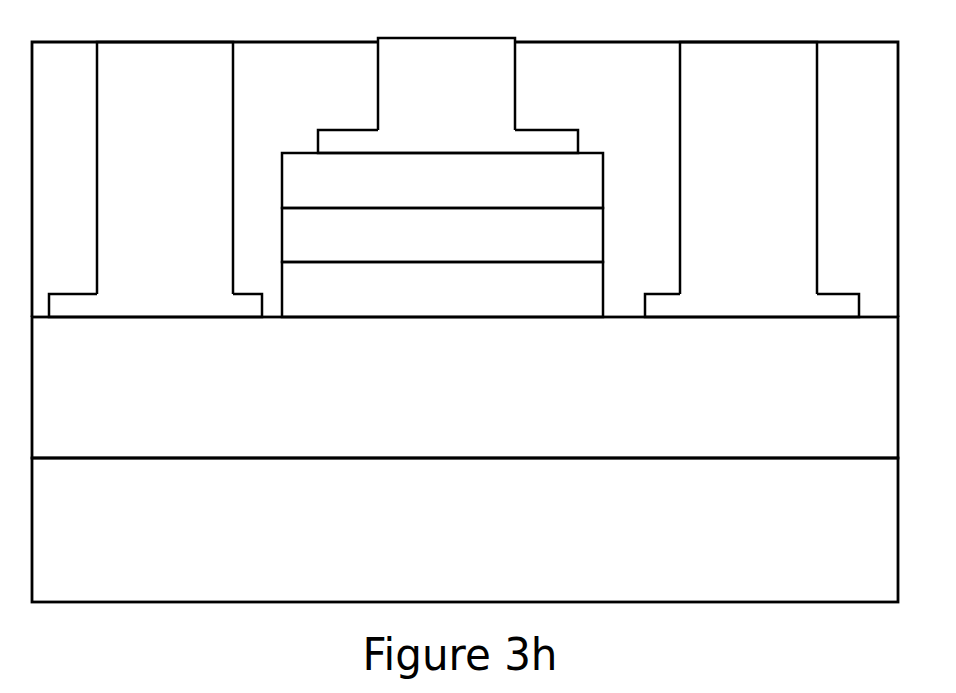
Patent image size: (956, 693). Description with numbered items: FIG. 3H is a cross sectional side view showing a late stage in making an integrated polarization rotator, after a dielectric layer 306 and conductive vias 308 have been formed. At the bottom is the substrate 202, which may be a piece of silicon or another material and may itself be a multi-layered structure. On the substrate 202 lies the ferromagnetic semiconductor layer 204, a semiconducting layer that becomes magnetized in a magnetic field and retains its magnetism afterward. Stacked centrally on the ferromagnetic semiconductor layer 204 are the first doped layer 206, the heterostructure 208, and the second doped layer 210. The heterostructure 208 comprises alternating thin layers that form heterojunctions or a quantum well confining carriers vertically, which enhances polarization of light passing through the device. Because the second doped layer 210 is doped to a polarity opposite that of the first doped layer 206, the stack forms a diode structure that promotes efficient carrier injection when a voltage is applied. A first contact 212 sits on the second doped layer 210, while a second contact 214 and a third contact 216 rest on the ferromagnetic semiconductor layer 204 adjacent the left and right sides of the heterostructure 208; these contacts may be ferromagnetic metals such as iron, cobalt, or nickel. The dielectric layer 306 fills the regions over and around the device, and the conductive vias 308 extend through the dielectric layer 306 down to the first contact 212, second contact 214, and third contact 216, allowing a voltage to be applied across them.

The substrate 202 is at (422, 563).
The ferromagnetic semiconductor layer 204 is at (433, 420).
The first doped layer 206 is at (582, 303).
The heterostructure 208 is at (568, 252).
The second doped layer 210 is at (602, 200).
The first contact 212 is at (328, 138).
The second contact 214 is at (142, 310).
The third contact 216 is at (760, 303).
The dielectric layer 306 is at (90, 141).
The conductive vias 308 is at (142, 157).